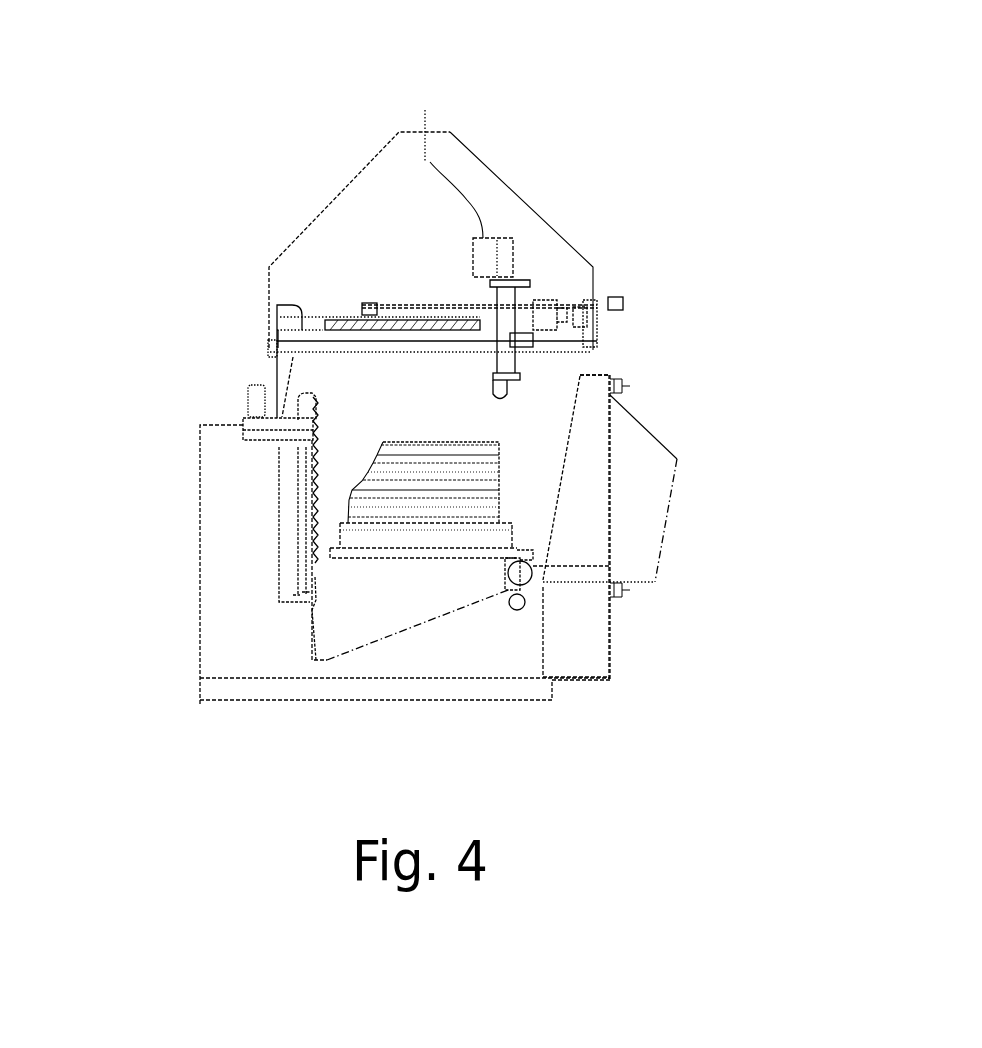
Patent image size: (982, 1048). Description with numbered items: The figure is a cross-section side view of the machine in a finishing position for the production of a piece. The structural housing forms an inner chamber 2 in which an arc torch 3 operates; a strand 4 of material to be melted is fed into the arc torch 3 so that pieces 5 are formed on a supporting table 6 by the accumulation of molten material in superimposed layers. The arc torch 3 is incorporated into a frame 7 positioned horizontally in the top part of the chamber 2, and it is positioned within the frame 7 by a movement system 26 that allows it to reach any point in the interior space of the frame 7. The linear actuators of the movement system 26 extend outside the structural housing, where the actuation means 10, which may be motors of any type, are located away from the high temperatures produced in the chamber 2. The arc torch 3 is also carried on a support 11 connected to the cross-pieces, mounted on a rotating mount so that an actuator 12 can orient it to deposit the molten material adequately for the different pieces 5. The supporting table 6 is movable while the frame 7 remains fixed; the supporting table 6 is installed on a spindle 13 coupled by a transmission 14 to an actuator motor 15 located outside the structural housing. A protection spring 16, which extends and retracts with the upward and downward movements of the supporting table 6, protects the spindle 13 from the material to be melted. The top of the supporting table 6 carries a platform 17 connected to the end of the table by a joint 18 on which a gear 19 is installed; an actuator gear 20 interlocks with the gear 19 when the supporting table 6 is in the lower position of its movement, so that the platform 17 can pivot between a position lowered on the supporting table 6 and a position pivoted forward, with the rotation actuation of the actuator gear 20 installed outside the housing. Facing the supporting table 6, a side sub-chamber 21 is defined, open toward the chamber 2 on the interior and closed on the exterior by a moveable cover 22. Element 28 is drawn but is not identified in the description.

The inner chamber 2 is at (360, 375).
The arc torch 3 is at (500, 393).
The strand 4 is at (429, 160).
The pieces 5 is at (465, 477).
The supporting table 6 is at (348, 617).
The frame 7 is at (362, 336).
The actuation means 10 is at (623, 308).
The support 11 is at (530, 287).
The actuator 12 is at (497, 372).
The spindle 13 is at (297, 488).
The transmission 14 is at (310, 434).
The actuator motor 15 is at (255, 393).
The protection spring 16 is at (316, 417).
The platform 17 is at (363, 540).
The joint 18 is at (517, 572).
The gear 19 is at (617, 566).
The actuator gear 20 is at (518, 600).
The side sub-chamber 21 is at (582, 527).
The moveable cover 22 is at (643, 473).
The movement system 26 is at (417, 272).
The holder 28 is at (568, 423).